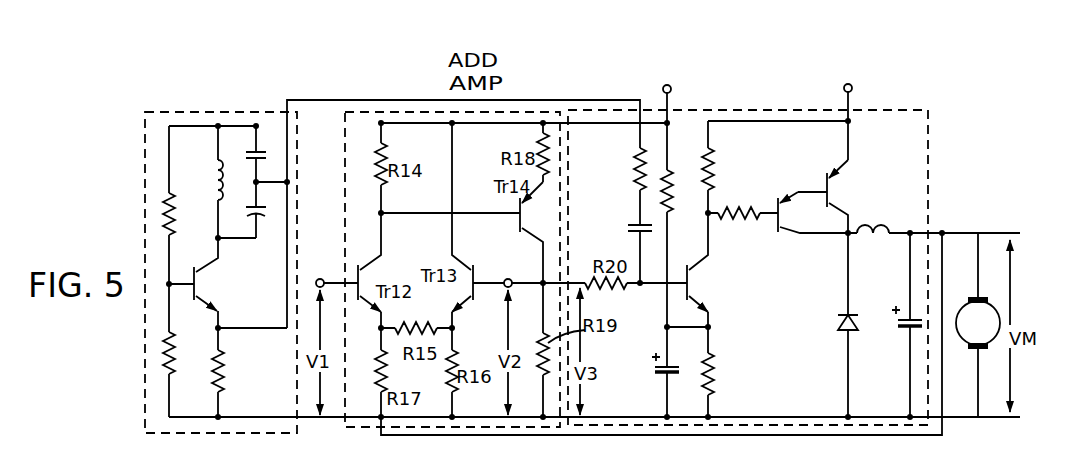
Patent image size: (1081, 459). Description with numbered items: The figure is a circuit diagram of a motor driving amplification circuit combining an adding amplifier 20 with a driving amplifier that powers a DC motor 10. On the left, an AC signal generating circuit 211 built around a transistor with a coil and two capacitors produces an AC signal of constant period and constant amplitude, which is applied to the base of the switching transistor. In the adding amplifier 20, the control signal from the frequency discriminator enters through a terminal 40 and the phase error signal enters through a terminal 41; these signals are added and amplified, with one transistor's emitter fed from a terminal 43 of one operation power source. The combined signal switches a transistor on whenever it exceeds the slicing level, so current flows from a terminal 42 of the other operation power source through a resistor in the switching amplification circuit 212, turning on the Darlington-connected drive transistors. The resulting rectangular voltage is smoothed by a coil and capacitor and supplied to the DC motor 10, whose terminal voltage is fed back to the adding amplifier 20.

The DC motor 10 is at (966, 304).
The adding amplifier 20 is at (378, 112).
The terminal 40 is at (320, 279).
The terminal 41 is at (508, 279).
The terminal of operation power source VB1 42 is at (852, 88).
The terminal of operation power source VB2 43 is at (671, 89).
The AC signal generating circuit 211 is at (173, 112).
The switching amplification circuit 212 is at (737, 110).